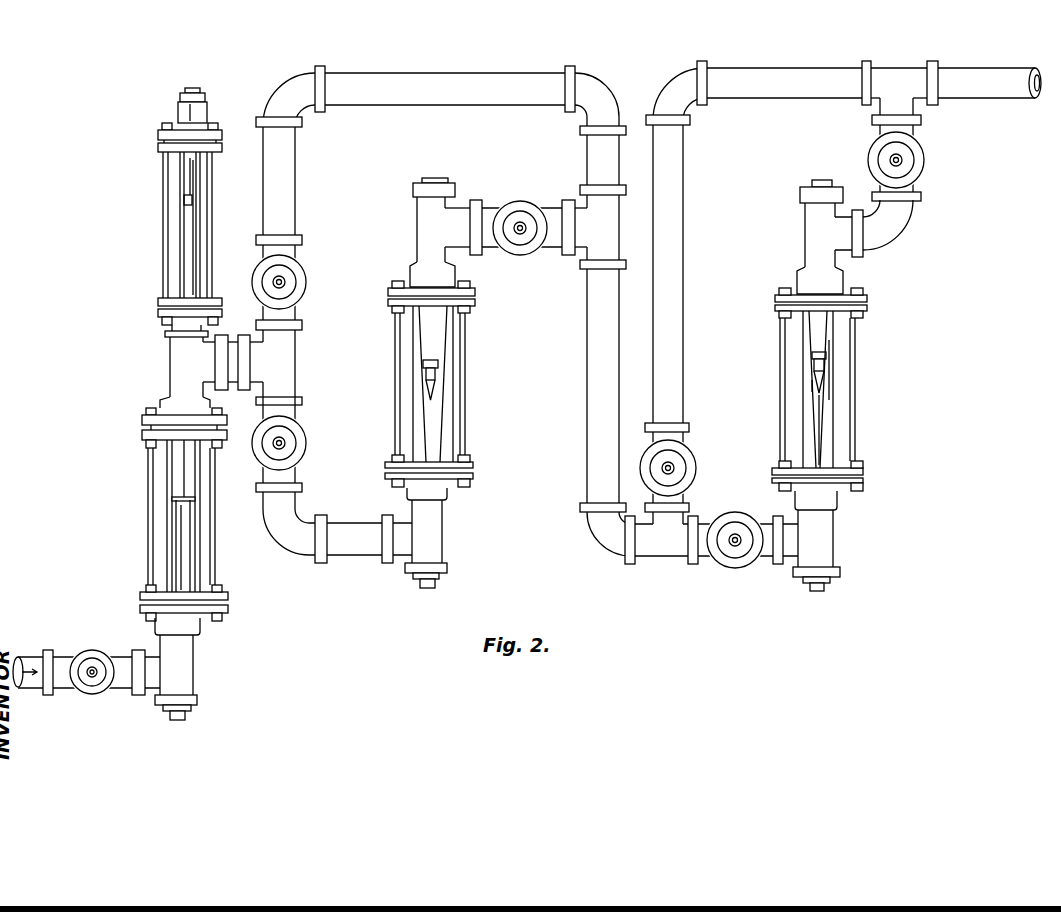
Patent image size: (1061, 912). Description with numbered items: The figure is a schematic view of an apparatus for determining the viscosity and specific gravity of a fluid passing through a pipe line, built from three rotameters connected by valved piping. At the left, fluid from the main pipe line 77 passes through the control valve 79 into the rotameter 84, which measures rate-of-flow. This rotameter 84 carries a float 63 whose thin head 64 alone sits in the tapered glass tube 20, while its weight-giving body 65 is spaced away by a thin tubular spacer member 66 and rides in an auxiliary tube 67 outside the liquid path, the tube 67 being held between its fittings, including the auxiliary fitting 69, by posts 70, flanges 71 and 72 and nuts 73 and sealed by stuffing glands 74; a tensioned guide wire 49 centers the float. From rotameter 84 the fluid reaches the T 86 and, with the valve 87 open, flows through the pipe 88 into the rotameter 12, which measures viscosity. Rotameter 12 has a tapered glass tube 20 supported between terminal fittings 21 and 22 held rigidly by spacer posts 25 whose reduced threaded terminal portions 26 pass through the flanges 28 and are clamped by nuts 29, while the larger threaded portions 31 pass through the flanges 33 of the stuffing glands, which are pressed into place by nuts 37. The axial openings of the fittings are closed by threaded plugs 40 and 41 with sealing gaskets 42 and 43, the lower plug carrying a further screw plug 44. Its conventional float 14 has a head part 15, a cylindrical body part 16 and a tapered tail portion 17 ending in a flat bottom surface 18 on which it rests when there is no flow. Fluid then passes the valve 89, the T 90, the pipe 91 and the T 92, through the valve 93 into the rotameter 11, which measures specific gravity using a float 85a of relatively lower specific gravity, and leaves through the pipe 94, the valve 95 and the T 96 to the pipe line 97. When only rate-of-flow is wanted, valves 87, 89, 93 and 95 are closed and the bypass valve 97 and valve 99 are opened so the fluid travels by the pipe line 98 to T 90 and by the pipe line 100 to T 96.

The rotameter 11 is at (776, 394).
The rotameter 12 is at (465, 385).
The float 14 is at (425, 372).
The head part 15 is at (438, 363).
The body part 16 is at (437, 377).
The tail portion 17 is at (433, 395).
The flat bottom surface 18 is at (815, 390).
The tapered glass tube 20 is at (168, 542).
The terminal fitting 21 is at (186, 679).
The terminal fitting 22 is at (626, 245).
The spacer posts 25 is at (215, 538).
The reduced threaded terminal portions 26 is at (464, 288).
The flanges 28 is at (222, 612).
The nuts 29 is at (222, 622).
The threaded portions 31 is at (470, 312).
The flanges 33 is at (222, 600).
The nuts 37 is at (222, 592).
The threaded plug 40 is at (185, 712).
The threaded plug 41 is at (440, 178).
The sealing gasket 42 is at (197, 698).
The sealing gasket 43 is at (413, 190).
The screw plug 44 is at (178, 722).
The guide wire 49 is at (187, 183).
The float 63 is at (182, 450).
The head 64 is at (172, 508).
The body 65 is at (184, 202).
The tubular spacer member 66 is at (183, 283).
The auxiliary tube 67 is at (193, 250).
The auxiliary fitting 69 is at (180, 105).
The posts 70 is at (163, 248).
The flange 71 is at (158, 317).
The flange 72 is at (158, 133).
The nuts 73 is at (165, 326).
The stuffing glands 74 is at (158, 149).
The main pipe line 77 is at (25, 657).
The control valve 79 is at (90, 650).
The rotameter 84 is at (148, 404).
The float 85a is at (835, 375).
The T 86 is at (296, 362).
The valve 87 is at (308, 443).
The pipe 88 is at (298, 515).
The valve 89 is at (520, 201).
The T 90 is at (587, 262).
The pipe 91 is at (587, 380).
The T 92 is at (660, 560).
The valve 93 is at (735, 576).
The pipe 94 is at (905, 230).
The valve 95 is at (926, 160).
The T 96 is at (890, 68).
The pipe line 97 is at (309, 282).
The pipe line 98 is at (460, 75).
The valve 99 is at (690, 465).
The pipe line 100 is at (700, 237).